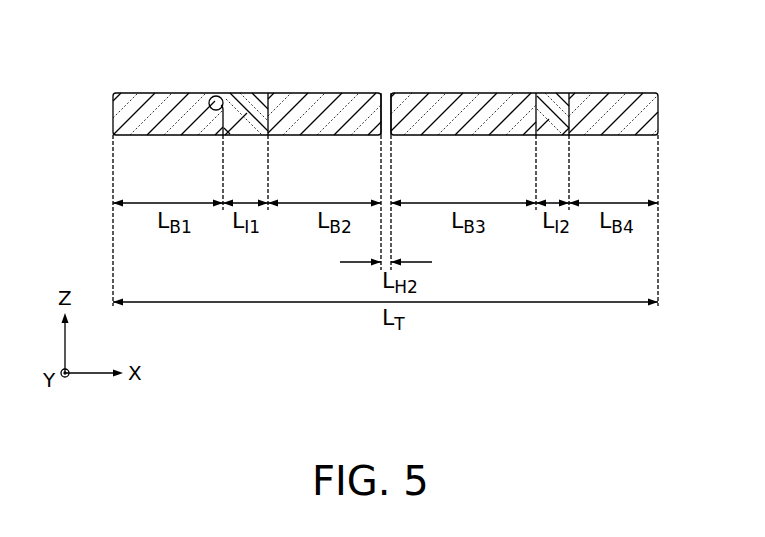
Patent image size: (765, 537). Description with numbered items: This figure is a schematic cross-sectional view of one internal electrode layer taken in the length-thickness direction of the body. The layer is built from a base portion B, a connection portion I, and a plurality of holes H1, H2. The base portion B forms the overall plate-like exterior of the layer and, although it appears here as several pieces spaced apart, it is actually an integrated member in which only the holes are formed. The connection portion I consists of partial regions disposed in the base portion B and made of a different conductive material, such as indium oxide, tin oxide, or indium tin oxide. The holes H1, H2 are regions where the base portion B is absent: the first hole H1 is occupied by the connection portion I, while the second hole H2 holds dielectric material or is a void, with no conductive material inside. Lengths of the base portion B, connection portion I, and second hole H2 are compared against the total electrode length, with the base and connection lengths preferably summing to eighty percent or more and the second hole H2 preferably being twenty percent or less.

The base portion B is at (311, 108).
The connection portion I is at (238, 108).
The first hole H1 is at (216, 96).
The second hole H2 is at (386, 113).